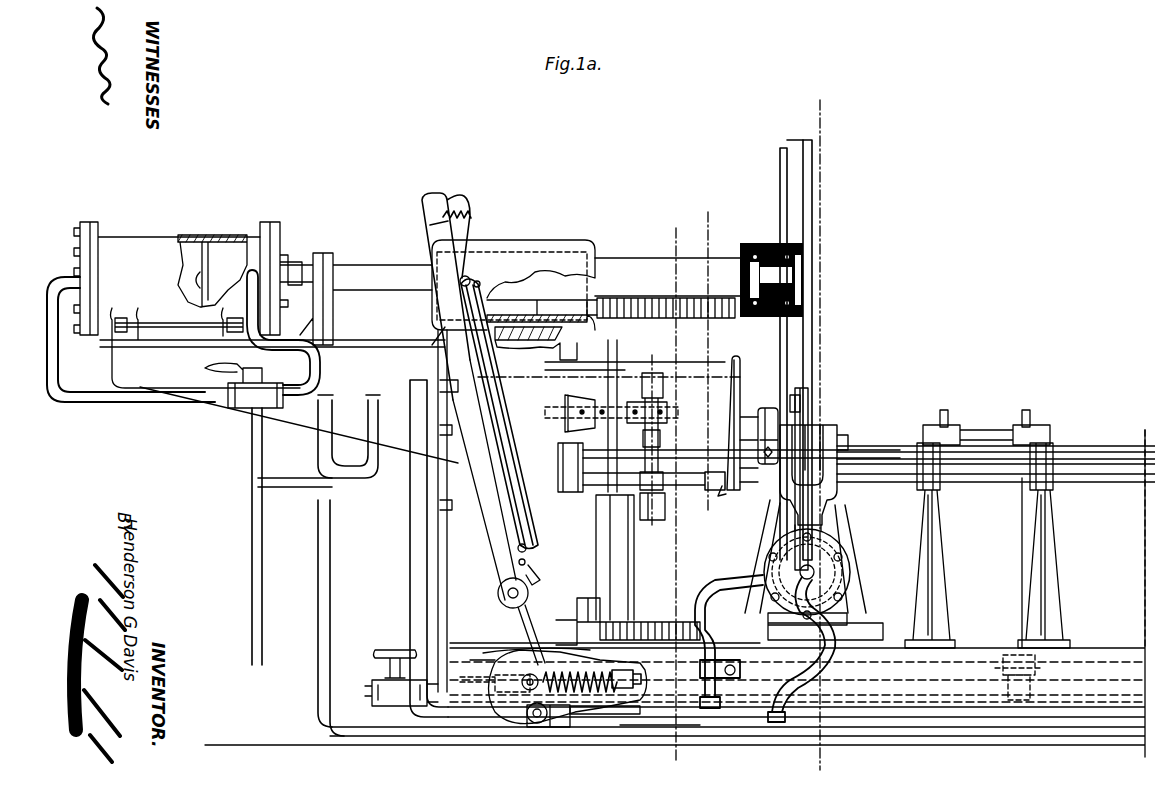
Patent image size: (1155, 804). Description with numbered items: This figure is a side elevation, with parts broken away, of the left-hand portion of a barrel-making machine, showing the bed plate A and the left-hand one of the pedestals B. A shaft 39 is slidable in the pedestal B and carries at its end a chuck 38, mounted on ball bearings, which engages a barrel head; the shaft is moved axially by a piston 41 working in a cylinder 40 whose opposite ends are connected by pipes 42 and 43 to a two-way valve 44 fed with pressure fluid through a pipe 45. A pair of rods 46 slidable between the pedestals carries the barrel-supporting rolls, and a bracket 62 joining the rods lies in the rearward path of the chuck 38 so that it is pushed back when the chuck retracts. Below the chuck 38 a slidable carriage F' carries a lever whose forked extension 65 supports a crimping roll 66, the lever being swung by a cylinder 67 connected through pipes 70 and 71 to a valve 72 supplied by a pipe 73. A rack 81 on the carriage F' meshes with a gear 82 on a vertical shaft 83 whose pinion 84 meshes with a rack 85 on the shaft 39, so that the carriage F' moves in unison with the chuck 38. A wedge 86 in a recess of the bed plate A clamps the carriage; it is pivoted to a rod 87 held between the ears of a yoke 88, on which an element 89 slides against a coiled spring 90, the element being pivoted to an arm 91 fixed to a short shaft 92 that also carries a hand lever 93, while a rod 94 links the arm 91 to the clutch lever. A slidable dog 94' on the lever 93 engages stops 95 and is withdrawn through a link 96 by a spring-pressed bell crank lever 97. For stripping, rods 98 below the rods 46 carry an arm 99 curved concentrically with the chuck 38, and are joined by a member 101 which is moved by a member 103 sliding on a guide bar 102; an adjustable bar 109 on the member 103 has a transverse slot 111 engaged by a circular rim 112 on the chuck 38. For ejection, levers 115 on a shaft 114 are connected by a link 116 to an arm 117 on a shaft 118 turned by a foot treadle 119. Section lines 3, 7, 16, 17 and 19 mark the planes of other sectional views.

The cylinder 40 is at (134, 246).
The piston 41 is at (205, 258).
The pipe 42 is at (88, 388).
The pipe 43 is at (300, 400).
The two way valve 44 is at (240, 405).
The pipe 45 is at (252, 458).
The rods 46 is at (996, 458).
The bracket 62 is at (768, 408).
The forked extension 65 is at (835, 500).
The roll 66 is at (820, 412).
The cylinder 67 is at (842, 578).
The pipe 70 is at (425, 496).
The pipe 71 is at (318, 525).
The valve 72 is at (398, 412).
The pipe 73 is at (287, 486).
The rack 81 is at (680, 615).
The gear 82 is at (632, 630).
The shaft 83 is at (628, 540).
The pinion 84 is at (612, 294).
The rack 85 is at (655, 306).
The wedge 86 is at (748, 627).
The rod 87 is at (610, 692).
The yoke 88 is at (505, 702).
The element 89 is at (495, 680).
The coiled spring 90 is at (548, 640).
The arm 91 is at (486, 656).
The shaft 92 is at (508, 596).
The lever 93 is at (496, 532).
The rod 94 is at (635, 740).
The slidable dog 94' is at (541, 542).
The stops 95 is at (533, 574).
The link 96 is at (505, 462).
The bell crank lever 97 is at (466, 208).
The rods 98 is at (985, 477).
The arm 99 is at (731, 390).
The member 101 is at (652, 540).
The guide bar 102 is at (544, 420).
The member 103 is at (664, 380).
The bar 109 is at (721, 426).
The transverse slot 111 is at (805, 402).
The circular rim 112 is at (748, 245).
The shaft 114 is at (1000, 442).
The levers 115 is at (955, 414).
The link 116 is at (1024, 578).
The arm 117 is at (1003, 667).
The shaft 118 is at (372, 694).
The foot treadle 119 is at (395, 650).
The chuck 38 is at (803, 186).
The shaft 39 is at (628, 262).
The section line 3 is at (811, 121).
The section line 7 is at (724, 228).
The section line 16 is at (666, 241).
The section line 17 is at (646, 363).
The section line 19 is at (527, 370).
The bed plate A is at (1082, 660).
The pedestal B is at (460, 572).
The slidable bracket or carriage F' is at (865, 555).